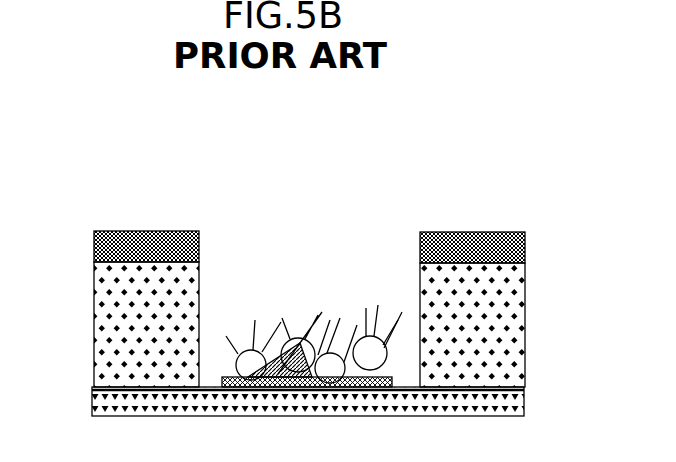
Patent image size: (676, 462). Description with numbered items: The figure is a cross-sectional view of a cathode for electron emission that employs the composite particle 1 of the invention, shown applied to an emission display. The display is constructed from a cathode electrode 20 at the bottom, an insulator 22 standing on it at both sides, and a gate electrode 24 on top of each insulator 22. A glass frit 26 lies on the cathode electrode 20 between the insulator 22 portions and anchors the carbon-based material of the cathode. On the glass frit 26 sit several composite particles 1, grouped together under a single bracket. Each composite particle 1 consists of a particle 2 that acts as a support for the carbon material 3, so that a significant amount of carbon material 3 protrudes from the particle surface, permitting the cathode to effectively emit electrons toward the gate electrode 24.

The cathode electrode 20 is at (92, 398).
The insulator 22 is at (98, 296).
The gate electrode 24 is at (107, 230).
The glass frit 26 is at (338, 387).
The composite particle 1 is at (377, 295).
The particle 2 is at (396, 338).
The carbon material 3 is at (387, 327).